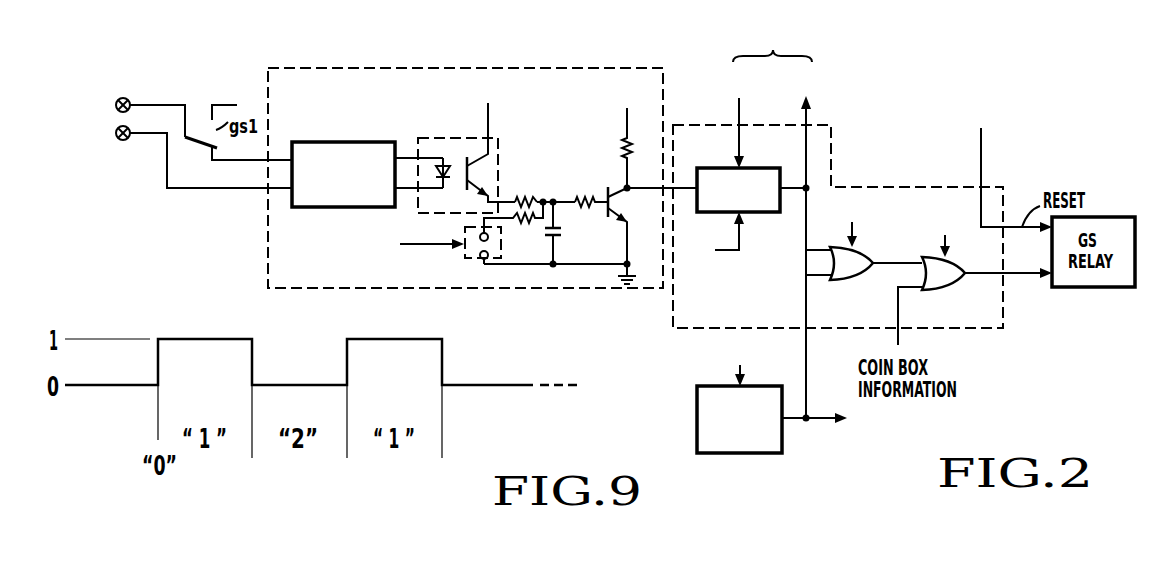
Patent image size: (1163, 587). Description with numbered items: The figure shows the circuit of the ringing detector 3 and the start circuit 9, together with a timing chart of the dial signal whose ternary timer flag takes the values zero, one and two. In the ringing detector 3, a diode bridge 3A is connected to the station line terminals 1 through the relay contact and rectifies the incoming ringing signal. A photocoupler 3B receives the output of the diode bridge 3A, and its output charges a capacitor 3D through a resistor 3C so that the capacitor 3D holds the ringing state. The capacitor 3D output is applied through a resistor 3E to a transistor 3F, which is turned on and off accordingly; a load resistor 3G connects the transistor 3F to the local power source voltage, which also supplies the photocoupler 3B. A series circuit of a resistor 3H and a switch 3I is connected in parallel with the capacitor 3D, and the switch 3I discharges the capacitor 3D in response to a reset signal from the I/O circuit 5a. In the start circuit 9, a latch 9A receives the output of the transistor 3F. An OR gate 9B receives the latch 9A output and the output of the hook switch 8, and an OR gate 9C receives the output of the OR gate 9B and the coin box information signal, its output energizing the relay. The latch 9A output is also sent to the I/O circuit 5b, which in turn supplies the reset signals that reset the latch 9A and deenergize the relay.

In FIG. 9, the station line terminals 1 is at (128, 97).
In FIG. 9, the ringing detector 3 is at (268, 250).
In FIG. 9, the diode bridge 3A is at (375, 141).
In FIG. 9, the photocoupler 3B is at (425, 138).
In FIG. 9, the resistor 3C is at (527, 196).
In FIG. 9, the capacitor 3D is at (562, 232).
In FIG. 9, the resistor 3E is at (581, 196).
In FIG. 9, the transistor 3F is at (625, 203).
In FIG. 9, the load resistor 3G is at (617, 146).
In FIG. 9, the resistor 3H is at (524, 225).
In FIG. 9, the switch 3I is at (465, 257).
In FIG. 9, the I/O circuit 5a is at (375, 244).
In FIG. 2, the I/O circuit 5b is at (892, 231).
In FIG. 2, the hook switch 8 is at (784, 446).
In FIG. 2, the start circuit 9 is at (983, 330).
In FIG. 2, the latch 9A is at (760, 168).
In FIG. 2, the OR gate 9B is at (849, 282).
In FIG. 2, the OR gate 9C is at (957, 290).